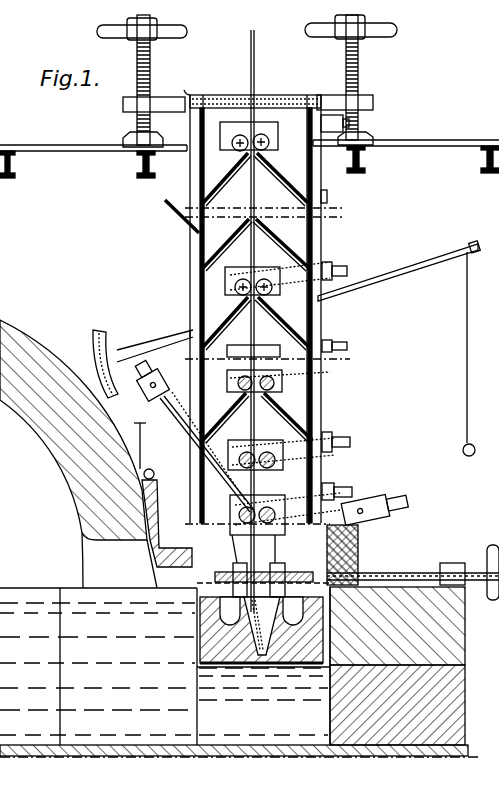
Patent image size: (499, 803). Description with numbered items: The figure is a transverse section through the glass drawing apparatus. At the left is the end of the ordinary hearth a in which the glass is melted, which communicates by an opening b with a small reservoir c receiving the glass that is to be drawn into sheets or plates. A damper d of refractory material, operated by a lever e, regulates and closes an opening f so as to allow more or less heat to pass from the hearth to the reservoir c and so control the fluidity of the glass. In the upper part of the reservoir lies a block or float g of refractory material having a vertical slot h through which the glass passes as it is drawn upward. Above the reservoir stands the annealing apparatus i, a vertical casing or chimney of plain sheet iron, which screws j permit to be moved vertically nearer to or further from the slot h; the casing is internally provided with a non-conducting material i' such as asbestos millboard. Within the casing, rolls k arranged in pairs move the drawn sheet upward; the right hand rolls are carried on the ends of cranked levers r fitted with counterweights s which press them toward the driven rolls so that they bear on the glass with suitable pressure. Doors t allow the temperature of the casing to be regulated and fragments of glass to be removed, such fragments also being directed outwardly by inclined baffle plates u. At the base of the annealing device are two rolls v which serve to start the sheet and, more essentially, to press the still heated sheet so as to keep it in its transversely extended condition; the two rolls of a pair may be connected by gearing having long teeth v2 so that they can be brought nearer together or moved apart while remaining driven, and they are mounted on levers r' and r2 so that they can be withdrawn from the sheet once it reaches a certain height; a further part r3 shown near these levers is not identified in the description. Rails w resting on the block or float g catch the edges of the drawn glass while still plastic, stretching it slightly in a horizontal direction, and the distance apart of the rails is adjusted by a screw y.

The hearth a is at (73, 440).
The opening b is at (98, 666).
The reservoir c is at (240, 672).
The damper d is at (153, 503).
The lever e is at (130, 346).
The opening f is at (119, 560).
The block or float g is at (228, 653).
The vertical slot h is at (266, 650).
The annealing apparatus i is at (232, 293).
The non-conducting material i' is at (331, 309).
The screws j is at (148, 61).
The rolls k is at (276, 328).
The cranked levers r is at (349, 436).
The lever r' is at (285, 549).
The lever r2 is at (192, 432).
The pin r3 is at (240, 546).
The counterweights s is at (327, 268).
The doors t is at (336, 318).
The inclined baffle plates u is at (222, 184).
The rolls v is at (238, 580).
The long teeth v2 is at (240, 556).
The rails w is at (283, 586).
The screw y is at (405, 572).